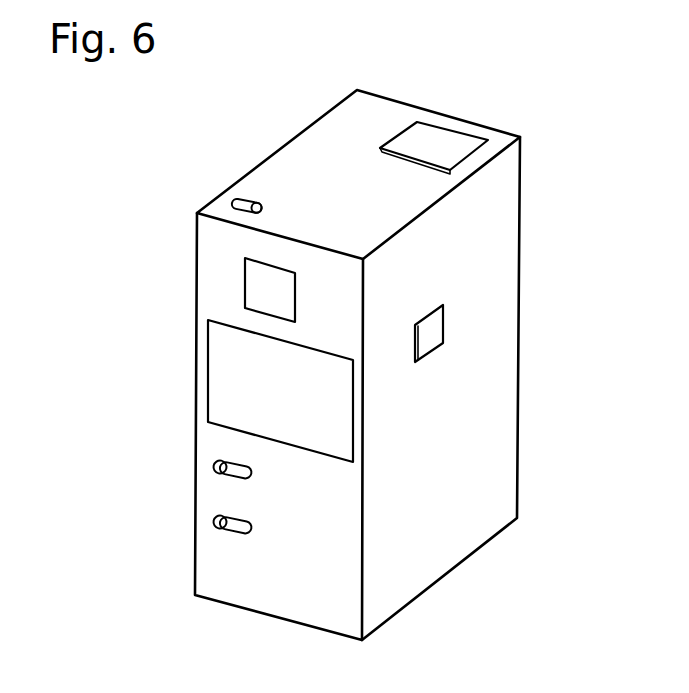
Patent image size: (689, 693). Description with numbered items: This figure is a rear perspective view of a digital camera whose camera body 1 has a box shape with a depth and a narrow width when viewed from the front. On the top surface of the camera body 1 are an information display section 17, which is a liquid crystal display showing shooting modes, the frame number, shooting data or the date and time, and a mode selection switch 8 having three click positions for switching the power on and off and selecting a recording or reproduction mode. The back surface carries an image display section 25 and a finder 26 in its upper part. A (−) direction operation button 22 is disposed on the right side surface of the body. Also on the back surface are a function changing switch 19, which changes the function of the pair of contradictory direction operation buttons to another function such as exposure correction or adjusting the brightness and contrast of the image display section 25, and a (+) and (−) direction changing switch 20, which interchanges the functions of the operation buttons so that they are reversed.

The camera body 1 is at (473, 518).
The mode selection switch 8 is at (237, 200).
The information display section 17 is at (440, 142).
The function changing switch 19 is at (212, 470).
The (+) and (−) direction changing switch 20 is at (213, 524).
The (−) direction operation button 22 is at (432, 327).
The image display section 25 is at (228, 375).
The finder 26 is at (262, 288).